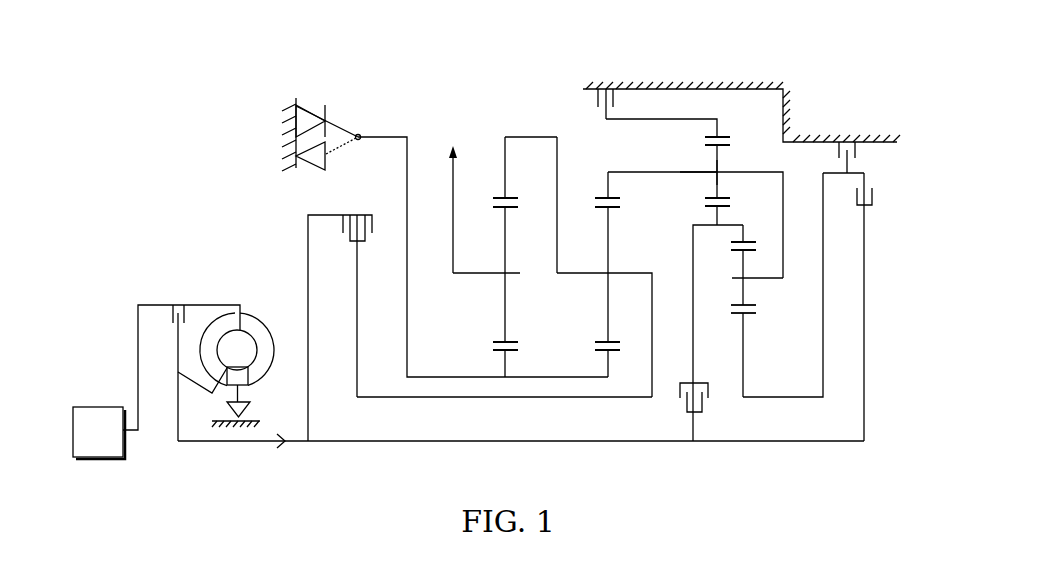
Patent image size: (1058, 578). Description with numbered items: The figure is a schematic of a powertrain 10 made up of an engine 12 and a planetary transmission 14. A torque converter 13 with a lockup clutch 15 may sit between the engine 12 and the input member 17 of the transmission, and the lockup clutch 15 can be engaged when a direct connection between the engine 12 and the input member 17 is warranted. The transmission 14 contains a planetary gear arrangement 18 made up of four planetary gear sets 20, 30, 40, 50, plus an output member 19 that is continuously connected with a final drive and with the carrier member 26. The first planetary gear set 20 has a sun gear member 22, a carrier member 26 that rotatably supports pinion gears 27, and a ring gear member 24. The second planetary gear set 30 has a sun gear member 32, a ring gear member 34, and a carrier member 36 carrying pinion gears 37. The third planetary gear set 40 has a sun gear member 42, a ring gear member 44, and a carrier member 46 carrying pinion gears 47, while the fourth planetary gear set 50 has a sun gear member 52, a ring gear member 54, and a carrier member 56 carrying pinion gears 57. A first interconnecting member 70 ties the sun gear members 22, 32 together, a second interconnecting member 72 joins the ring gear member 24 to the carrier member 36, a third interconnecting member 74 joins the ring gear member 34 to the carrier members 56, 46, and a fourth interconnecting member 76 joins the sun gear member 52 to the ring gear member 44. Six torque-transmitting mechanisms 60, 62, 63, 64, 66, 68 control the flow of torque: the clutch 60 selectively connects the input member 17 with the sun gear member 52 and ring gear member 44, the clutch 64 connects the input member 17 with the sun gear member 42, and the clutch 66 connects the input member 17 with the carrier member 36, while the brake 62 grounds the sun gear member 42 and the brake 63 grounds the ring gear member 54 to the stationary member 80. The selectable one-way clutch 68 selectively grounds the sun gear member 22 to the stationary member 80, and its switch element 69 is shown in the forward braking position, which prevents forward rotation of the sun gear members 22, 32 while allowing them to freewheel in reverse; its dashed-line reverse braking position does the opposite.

The powertrain 10 is at (482, 42).
The engine 12 is at (87, 443).
The torque converter 13 is at (270, 314).
The planetary transmission 14 is at (655, 41).
The lockup clutch 15 is at (168, 334).
The input member 17 is at (247, 443).
The planetary gear arrangement 18 is at (489, 106).
The output member 19 is at (452, 215).
The first planetary gear set 20 is at (466, 349).
The sun gear member 22 is at (514, 353).
The ring gear member 24 is at (503, 196).
The carrier member 26 is at (503, 268).
The pinion gears 27 is at (508, 222).
The second planetary gear set 30 is at (635, 352).
The sun gear member 32 is at (597, 352).
The ring gear member 34 is at (602, 196).
The carrier member 36 is at (602, 266).
The pinion gears 37 is at (609, 243).
The third planetary gear set 40 is at (765, 324).
The sun gear member 42 is at (738, 317).
The ring gear member 44 is at (746, 236).
The carrier member 46 is at (764, 281).
The pinion gears 47 is at (736, 303).
The fourth planetary gear set 50 is at (729, 164).
The sun gear member 52 is at (706, 207).
The ring gear member 54 is at (716, 136).
The carrier member 56 is at (695, 170).
The pinion gears 57 is at (720, 178).
The second torque-transmitting mechanism 60 is at (714, 410).
The third torque-transmitting mechanism 62 is at (866, 154).
The fourth torque-transmitting mechanism 63 is at (595, 107).
The fifth torque-transmitting mechanism 64 is at (878, 205).
The sixth torque-transmitting mechanism 66 is at (371, 243).
The selectable one-way clutch 68 is at (341, 89).
The switch element 69 is at (343, 124).
The first interconnecting member 70 is at (557, 398).
The second interconnecting member 72 is at (559, 156).
The third interconnecting member 74 is at (643, 170).
The fourth interconnecting member 76 is at (729, 232).
The stationary member 80 is at (776, 88).